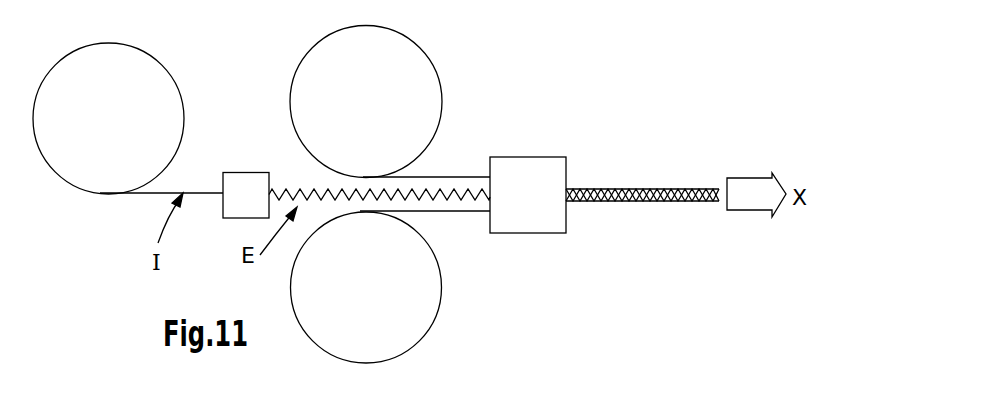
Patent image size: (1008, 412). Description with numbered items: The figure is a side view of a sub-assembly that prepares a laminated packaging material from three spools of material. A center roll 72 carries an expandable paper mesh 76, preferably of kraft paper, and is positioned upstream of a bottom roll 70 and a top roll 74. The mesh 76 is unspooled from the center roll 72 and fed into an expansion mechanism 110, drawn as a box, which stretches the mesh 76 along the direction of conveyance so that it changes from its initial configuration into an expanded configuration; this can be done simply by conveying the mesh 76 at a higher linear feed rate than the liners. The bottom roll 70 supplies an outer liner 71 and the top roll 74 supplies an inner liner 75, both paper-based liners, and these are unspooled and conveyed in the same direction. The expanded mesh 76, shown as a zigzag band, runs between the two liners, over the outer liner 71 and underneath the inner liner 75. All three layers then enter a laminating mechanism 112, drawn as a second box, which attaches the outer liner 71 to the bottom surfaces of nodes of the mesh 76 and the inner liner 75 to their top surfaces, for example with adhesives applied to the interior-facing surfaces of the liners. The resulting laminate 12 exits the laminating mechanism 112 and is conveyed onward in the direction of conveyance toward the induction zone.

The center roll 72 is at (118, 130).
The top roll 74 is at (375, 116).
The bottom roll 70 is at (375, 298).
The expandable paper mesh 76 is at (138, 193).
The expansion mechanism 110 is at (245, 191).
The inner liner 75 is at (455, 177).
The outer liner 71 is at (448, 211).
The laminating mechanism 112 is at (545, 208).
The laminate 12 is at (650, 187).